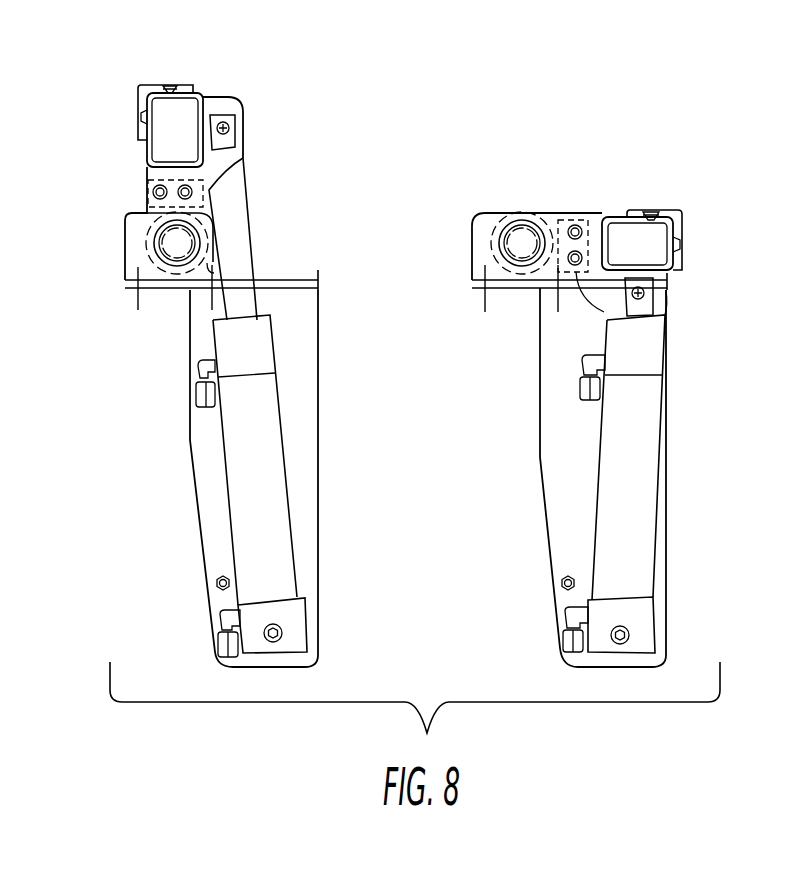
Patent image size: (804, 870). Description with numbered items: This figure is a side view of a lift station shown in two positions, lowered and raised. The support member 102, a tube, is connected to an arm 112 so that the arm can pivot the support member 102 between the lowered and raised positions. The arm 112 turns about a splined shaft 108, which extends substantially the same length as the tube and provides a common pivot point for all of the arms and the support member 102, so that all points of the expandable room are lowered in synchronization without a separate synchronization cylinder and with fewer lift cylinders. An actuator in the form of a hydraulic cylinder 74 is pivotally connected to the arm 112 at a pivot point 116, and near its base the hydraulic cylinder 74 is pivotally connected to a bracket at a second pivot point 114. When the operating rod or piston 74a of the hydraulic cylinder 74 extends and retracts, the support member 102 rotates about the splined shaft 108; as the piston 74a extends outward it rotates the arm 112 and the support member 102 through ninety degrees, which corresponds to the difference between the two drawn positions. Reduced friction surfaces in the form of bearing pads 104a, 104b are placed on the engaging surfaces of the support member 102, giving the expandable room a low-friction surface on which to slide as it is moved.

The hydraulic cylinder 74 is at (267, 468).
The piston 74a is at (238, 193).
The support member 102 is at (195, 96).
The bearing pad 104a is at (139, 131).
The bearing pad 104b is at (150, 86).
The splined shaft 108 is at (167, 243).
The arm 112 is at (232, 96).
The pivot point 114 is at (284, 631).
The pivot point 116 is at (228, 128).